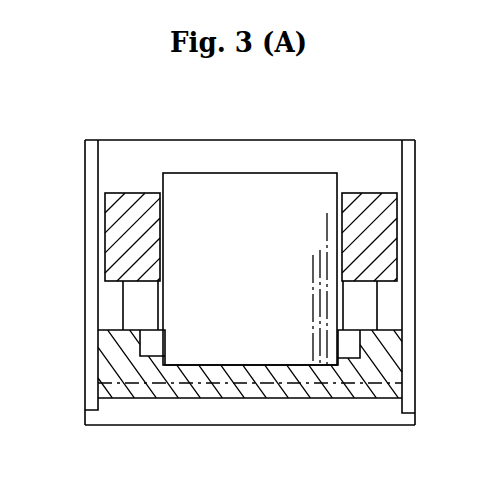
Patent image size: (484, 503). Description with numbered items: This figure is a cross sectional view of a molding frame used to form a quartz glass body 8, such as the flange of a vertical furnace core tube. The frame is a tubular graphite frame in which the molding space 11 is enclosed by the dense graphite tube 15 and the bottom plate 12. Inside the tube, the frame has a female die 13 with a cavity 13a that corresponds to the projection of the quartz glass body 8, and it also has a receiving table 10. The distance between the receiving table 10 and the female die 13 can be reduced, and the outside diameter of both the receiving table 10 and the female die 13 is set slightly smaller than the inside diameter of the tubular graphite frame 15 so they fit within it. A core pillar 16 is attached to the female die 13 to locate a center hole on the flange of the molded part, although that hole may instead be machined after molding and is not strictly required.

The quartz glass body 8 is at (366, 302).
The receiving table 10 is at (378, 240).
The molding space 11 is at (375, 172).
The bottom plate 12 is at (343, 408).
The female die 13 is at (258, 400).
The cavity 13a is at (155, 350).
The dense graphite tube 15 is at (90, 276).
The core pillar 16 is at (260, 195).